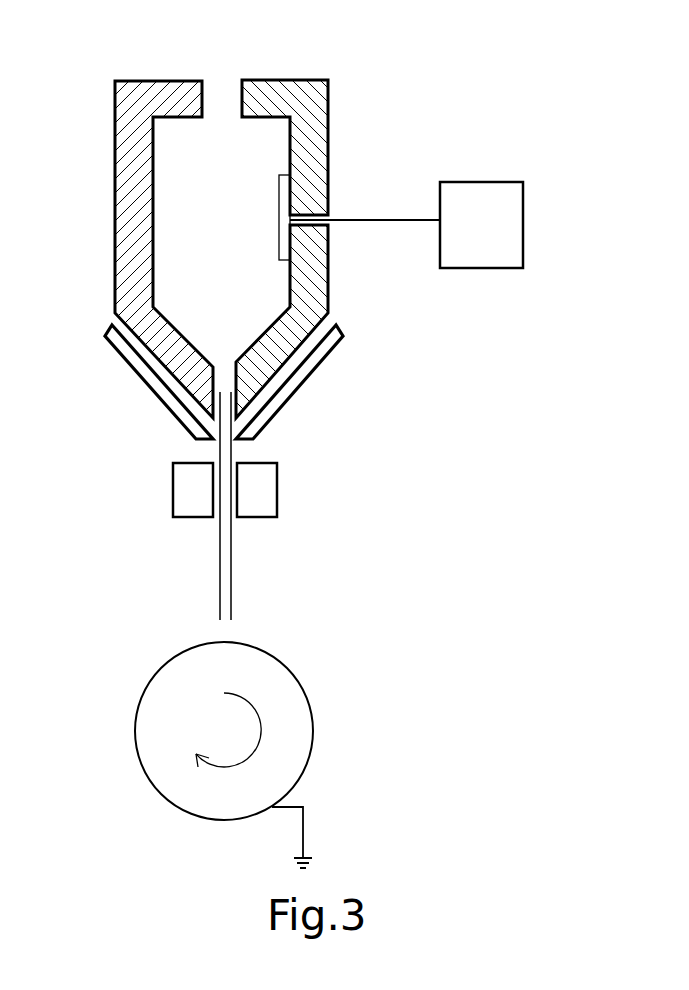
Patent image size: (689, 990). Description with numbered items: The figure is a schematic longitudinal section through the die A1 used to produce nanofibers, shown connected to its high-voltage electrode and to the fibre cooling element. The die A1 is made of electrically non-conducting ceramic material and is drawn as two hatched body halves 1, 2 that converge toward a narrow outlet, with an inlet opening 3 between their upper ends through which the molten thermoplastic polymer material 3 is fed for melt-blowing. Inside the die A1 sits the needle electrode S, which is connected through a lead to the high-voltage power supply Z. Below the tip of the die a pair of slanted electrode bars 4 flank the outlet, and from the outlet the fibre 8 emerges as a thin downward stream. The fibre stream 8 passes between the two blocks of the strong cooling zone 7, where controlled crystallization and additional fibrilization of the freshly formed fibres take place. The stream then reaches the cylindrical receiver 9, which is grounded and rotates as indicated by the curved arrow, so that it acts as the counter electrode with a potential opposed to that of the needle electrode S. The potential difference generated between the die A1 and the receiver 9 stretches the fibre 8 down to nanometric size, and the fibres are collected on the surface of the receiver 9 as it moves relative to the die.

The first housing half / nozzle body wall 1 is at (160, 80).
The second housing half / nozzle body wall 2 is at (313, 372).
The thermoplastic polymer material 3 is at (222, 98).
The electrodes 4 is at (120, 328).
The cooling zone 7 is at (265, 488).
The fibre 8 is at (228, 573).
The receiver 9 is at (283, 690).
The needle electrode S is at (285, 200).
The high-voltage power supply Z is at (500, 208).
The die A1 is at (344, 250).